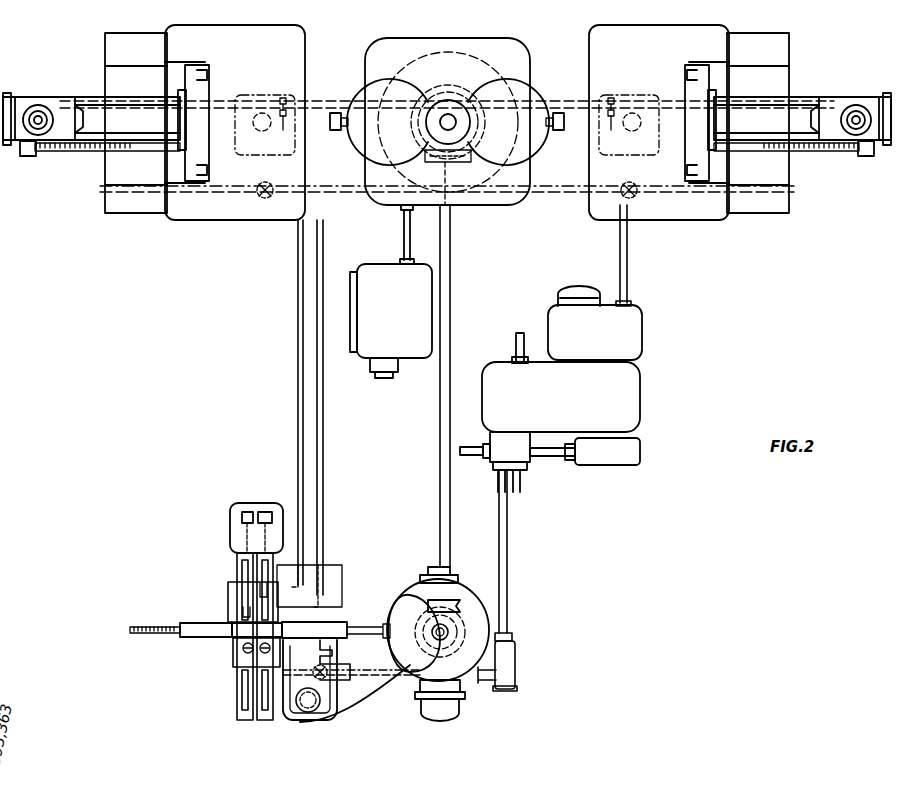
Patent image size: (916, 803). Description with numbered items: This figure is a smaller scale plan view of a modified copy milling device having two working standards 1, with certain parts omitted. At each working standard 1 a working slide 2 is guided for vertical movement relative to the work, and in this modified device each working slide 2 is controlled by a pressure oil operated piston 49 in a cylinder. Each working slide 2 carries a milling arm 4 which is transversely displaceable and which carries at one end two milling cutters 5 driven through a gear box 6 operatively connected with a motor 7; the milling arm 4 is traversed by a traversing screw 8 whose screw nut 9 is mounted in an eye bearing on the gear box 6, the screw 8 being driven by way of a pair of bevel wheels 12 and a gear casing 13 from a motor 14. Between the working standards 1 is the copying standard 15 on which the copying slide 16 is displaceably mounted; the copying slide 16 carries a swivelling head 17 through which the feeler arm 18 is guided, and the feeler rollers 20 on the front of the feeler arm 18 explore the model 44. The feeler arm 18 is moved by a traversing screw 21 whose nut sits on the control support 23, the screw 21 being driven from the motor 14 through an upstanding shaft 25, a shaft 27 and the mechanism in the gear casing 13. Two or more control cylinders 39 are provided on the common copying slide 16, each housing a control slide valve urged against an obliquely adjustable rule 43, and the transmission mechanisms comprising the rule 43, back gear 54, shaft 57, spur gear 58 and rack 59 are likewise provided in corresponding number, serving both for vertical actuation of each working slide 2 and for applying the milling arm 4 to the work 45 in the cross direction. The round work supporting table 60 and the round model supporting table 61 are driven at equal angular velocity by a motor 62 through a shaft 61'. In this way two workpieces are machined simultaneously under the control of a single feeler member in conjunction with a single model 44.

The working standard 1 is at (182, 33).
The working slide 2 is at (258, 28).
The milling cutter carrier arm 4 is at (336, 113).
The milling cutters 5 is at (347, 126).
The gear box 6 is at (60, 103).
The motor 7 is at (38, 105).
The traversing screw 8 is at (60, 150).
The screw nut 9 is at (26, 154).
The pair of bevel wheels 12 is at (264, 199).
The gear casing 13 is at (634, 394).
The motor 14 is at (574, 292).
The copying standard 15 is at (297, 712).
The copying slide 16 is at (338, 652).
The swivelling head 17 is at (340, 624).
The feeler arm 18 is at (243, 636).
The feeler rollers 20 is at (398, 676).
The traversing screw 21 is at (150, 634).
The control support 23 is at (200, 633).
The upstanding shaft 25 is at (311, 708).
The shaft 27 is at (508, 548).
The control cylinder 39 is at (248, 653).
The rule 43 is at (265, 712).
The model 44 is at (402, 597).
The work 45 is at (378, 68).
The piston 49 is at (256, 130).
The back gear 54 is at (258, 590).
The shaft 57 is at (297, 420).
The spur gear 58 is at (283, 97).
The rack 59 is at (283, 131).
The round work supporting table 60 is at (503, 48).
The round model supporting table 61 is at (463, 644).
The shaft 61' is at (465, 364).
The motor 62 is at (380, 374).